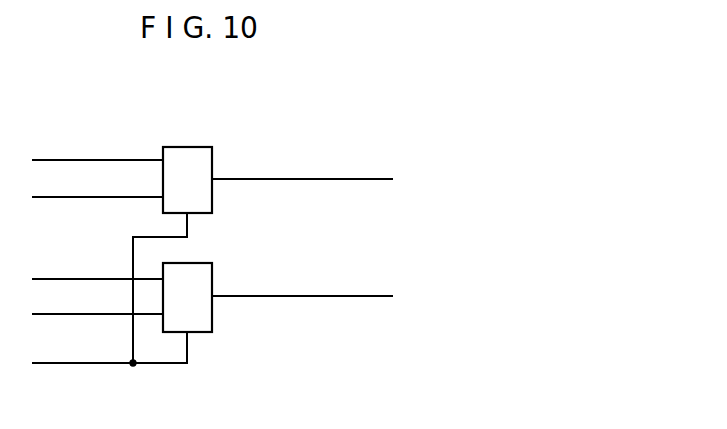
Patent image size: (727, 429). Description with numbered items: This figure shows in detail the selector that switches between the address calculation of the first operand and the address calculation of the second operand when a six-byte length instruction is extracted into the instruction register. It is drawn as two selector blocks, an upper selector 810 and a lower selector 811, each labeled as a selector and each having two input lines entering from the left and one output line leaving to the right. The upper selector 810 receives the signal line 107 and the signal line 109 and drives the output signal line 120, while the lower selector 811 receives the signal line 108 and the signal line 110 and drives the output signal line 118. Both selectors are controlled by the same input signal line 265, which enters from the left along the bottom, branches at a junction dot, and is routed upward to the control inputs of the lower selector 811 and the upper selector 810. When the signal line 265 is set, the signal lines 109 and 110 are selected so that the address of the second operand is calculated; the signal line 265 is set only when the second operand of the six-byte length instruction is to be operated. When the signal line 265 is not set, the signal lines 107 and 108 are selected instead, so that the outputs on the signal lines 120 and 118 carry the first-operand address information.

The selector 810 is at (189, 147).
The selector 811 is at (212, 318).
The signal line 107 is at (65, 160).
The signal line 109 is at (67, 198).
The signal line 108 is at (67, 279).
The signal line 110 is at (66, 314).
The input signal line 265 is at (66, 364).
The signal line 120 is at (283, 178).
The signal line 118 is at (286, 296).